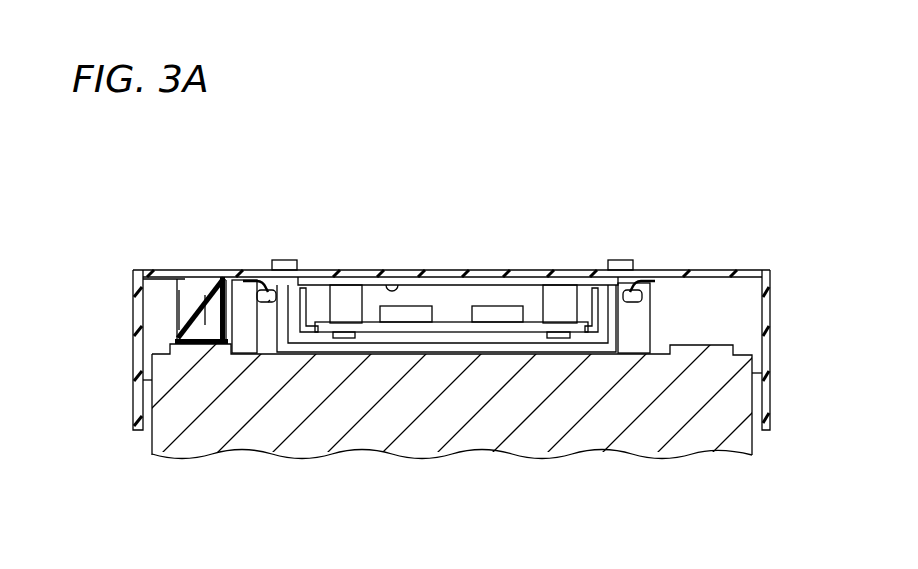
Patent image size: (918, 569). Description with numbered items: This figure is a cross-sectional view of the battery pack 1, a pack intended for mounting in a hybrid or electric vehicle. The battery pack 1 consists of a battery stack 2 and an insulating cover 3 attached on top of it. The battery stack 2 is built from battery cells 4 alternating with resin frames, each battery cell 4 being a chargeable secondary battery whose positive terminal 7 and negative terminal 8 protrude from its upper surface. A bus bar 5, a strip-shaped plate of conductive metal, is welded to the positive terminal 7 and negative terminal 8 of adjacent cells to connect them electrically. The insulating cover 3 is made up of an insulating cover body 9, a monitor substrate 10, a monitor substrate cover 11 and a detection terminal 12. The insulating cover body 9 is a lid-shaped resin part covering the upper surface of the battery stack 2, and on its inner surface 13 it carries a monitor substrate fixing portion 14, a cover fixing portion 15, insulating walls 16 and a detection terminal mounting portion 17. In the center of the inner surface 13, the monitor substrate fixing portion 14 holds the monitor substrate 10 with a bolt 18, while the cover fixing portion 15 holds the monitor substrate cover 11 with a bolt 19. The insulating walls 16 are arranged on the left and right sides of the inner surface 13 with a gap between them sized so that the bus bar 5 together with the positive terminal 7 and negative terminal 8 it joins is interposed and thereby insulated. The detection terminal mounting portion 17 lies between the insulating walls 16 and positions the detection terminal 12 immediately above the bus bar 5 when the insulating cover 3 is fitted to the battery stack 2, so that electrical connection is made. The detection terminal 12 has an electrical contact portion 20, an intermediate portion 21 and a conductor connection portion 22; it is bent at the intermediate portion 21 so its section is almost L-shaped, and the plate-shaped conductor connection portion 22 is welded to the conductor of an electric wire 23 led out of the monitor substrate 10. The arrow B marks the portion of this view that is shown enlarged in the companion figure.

The battery pack 1 is at (697, 183).
The battery stack 2 is at (402, 350).
The battery cell 4 is at (143, 398).
The insulating cover 3 is at (471, 236).
The insulating cover body 9 is at (728, 268).
The bus bar 5 is at (178, 338).
The positive terminal 7 is at (450, 380).
The negative terminal 8 is at (168, 347).
The arrow B is at (196, 363).
The monitor substrate 10 is at (453, 322).
The monitor substrate cover 11 is at (496, 343).
The detection terminal 12 is at (270, 181).
The inner surface 13 is at (393, 285).
The monitor substrate fixing portion 14 is at (347, 288).
The cover fixing portion 15 is at (283, 268).
The insulating wall 16 is at (258, 335).
The detection terminal mounting portion 17 is at (170, 292).
The bolt 18 is at (560, 340).
The bolt 19 is at (268, 302).
The electrical contact portion 20 is at (190, 328).
The intermediate portion 21 is at (206, 305).
The conductor connection portion 22 is at (224, 300).
The electric wire 23 is at (258, 290).